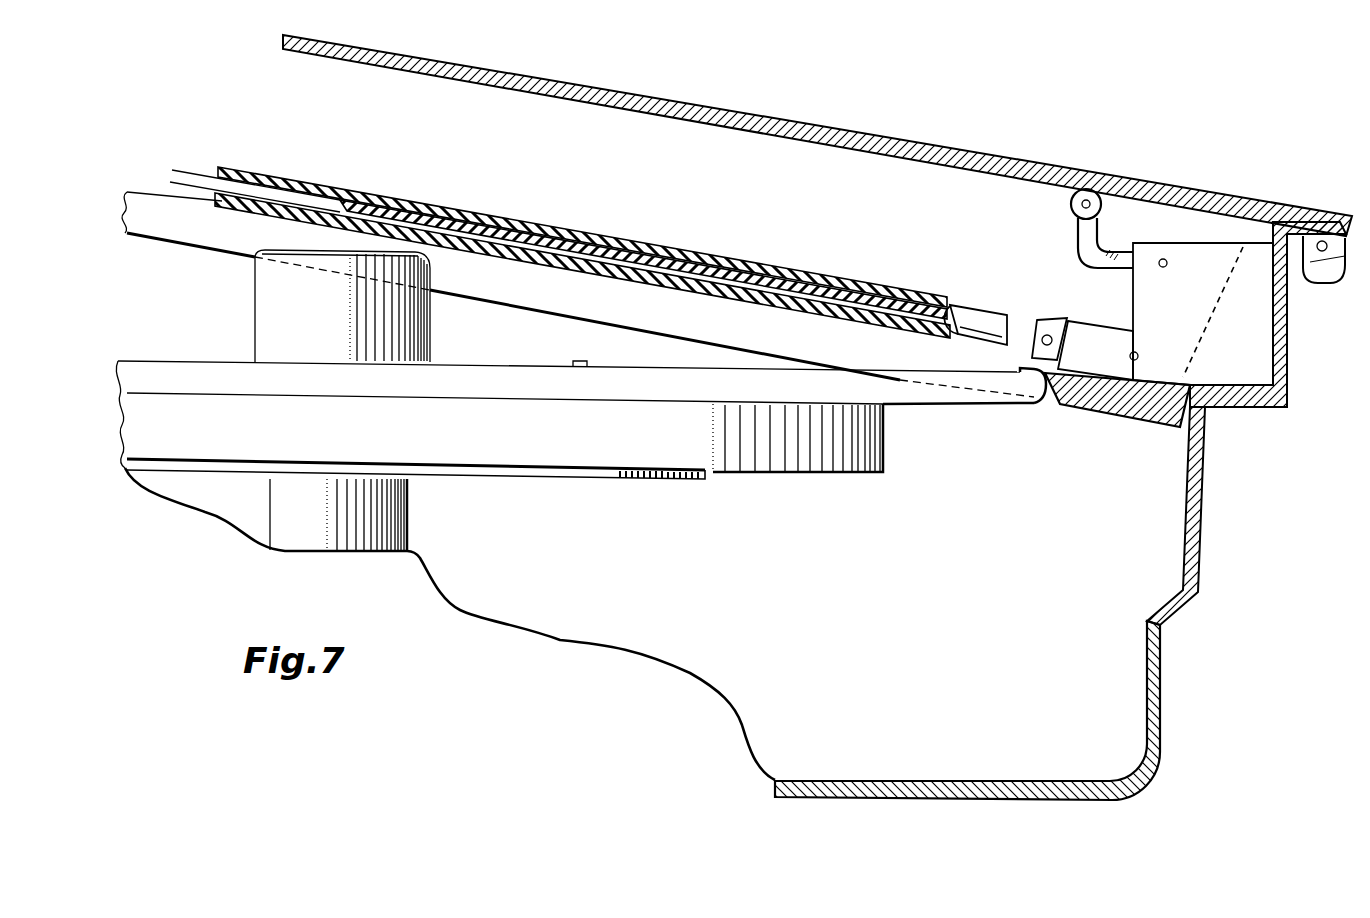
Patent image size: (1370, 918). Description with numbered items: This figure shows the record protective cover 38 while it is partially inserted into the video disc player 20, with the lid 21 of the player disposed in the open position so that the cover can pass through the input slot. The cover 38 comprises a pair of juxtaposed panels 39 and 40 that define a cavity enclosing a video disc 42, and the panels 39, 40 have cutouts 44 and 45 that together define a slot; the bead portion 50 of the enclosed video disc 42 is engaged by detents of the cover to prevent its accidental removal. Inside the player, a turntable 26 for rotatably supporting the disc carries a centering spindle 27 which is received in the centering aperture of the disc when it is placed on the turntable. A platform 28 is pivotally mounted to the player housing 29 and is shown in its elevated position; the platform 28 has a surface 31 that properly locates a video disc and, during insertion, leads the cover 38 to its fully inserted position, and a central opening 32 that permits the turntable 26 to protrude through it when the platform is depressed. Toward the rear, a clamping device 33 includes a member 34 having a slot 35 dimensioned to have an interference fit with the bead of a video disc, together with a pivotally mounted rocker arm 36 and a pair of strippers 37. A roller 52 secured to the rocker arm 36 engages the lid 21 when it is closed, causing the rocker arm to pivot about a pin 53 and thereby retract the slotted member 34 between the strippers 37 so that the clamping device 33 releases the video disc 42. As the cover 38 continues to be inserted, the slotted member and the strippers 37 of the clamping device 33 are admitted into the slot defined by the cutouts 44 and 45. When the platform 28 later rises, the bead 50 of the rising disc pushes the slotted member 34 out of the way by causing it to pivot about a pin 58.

The video disc player 20 is at (1247, 575).
The lid 21 is at (778, 118).
The turntable 26 is at (829, 472).
The centering spindle 27 is at (256, 312).
The platform 28 is at (1113, 412).
The player housing 29 is at (1205, 484).
The surface 31 is at (140, 182).
The central opening 32 is at (627, 328).
The clamping device 33 is at (1194, 318).
The member 34 is at (1063, 320).
The slot 35 is at (1034, 334).
The rocker arm 36 is at (1100, 226).
The strippers 37 is at (1100, 335).
The record protective cover 38 is at (778, 262).
The panel 39 is at (803, 275).
The panel 40 is at (803, 312).
The video disc 42 is at (546, 226).
The cutout 44 is at (977, 309).
The cutout 45 is at (963, 336).
The bead portion 50 is at (951, 303).
The roller 52 is at (1070, 206).
The pin 53 is at (1167, 265).
The pin 58 is at (1138, 357).